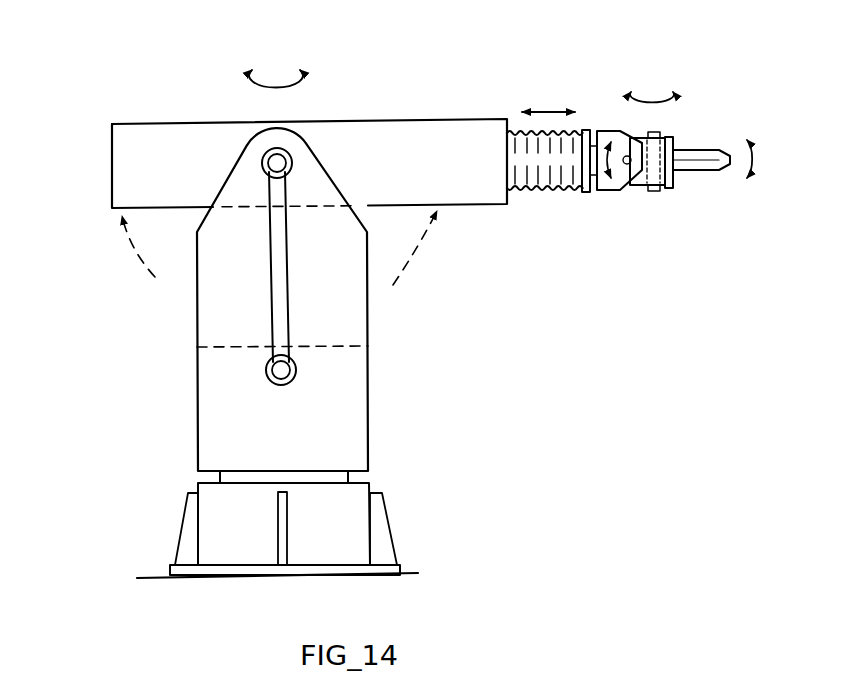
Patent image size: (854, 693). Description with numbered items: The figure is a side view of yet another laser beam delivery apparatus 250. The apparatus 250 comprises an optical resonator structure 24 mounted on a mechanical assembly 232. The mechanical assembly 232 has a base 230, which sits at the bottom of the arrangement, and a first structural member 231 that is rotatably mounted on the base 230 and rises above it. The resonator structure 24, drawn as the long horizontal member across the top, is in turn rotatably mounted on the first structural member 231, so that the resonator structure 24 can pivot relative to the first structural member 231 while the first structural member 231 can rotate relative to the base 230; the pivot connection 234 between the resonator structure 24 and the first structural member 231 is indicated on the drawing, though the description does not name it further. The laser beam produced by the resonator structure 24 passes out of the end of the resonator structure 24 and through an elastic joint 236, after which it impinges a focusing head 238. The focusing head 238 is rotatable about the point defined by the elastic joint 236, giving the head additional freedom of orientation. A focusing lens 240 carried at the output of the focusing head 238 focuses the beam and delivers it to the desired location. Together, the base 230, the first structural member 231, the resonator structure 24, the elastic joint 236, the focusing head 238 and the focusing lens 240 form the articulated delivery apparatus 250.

The optical resonator structure 24 is at (112, 127).
The base 230 is at (363, 492).
The first structural member 231 is at (368, 368).
The mechanical assembly 232 is at (345, 424).
The pivot 234 is at (268, 153).
The elastic joint 236 is at (545, 192).
The focusing head 238 is at (675, 182).
The focusing lens 240 is at (706, 150).
The laser beam delivery apparatus 250 is at (138, 316).